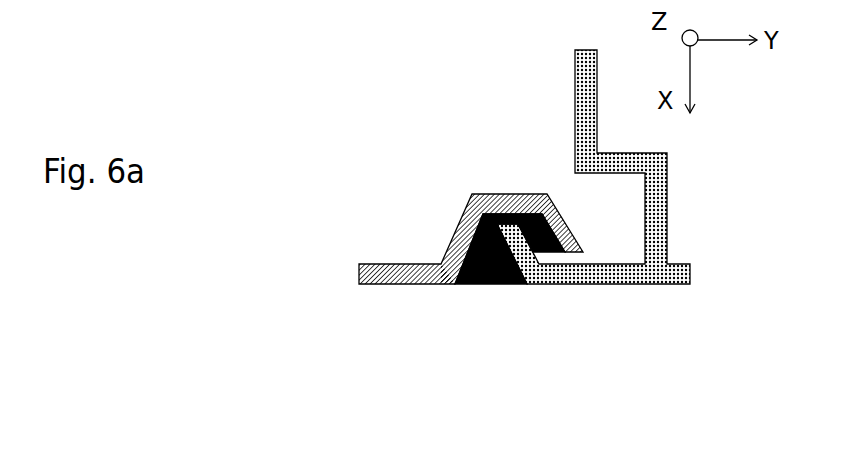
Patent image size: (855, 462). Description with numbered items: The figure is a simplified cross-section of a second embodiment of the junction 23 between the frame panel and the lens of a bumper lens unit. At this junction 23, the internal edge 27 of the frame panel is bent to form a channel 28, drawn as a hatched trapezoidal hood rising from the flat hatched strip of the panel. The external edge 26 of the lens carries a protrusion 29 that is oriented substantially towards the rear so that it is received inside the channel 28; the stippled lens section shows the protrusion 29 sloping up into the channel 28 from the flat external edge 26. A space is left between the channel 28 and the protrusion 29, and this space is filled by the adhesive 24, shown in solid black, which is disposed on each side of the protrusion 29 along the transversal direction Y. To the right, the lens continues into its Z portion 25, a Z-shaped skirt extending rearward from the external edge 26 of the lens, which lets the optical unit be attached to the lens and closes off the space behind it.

The junction 23 is at (503, 313).
The adhesive 24 is at (475, 282).
The Z portion 25 is at (582, 70).
The external edge 26 is at (617, 277).
The internal edge 27 is at (389, 276).
The channel 28 is at (467, 215).
The protrusion 29 is at (525, 255).